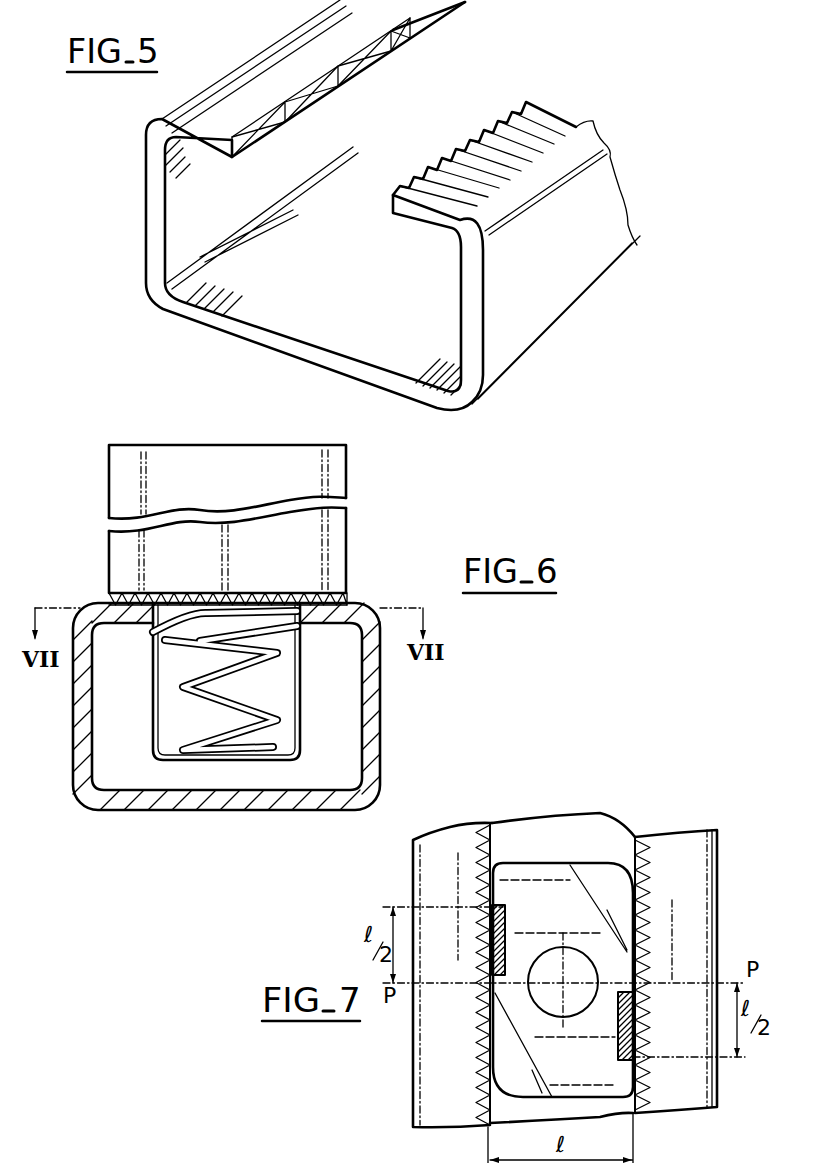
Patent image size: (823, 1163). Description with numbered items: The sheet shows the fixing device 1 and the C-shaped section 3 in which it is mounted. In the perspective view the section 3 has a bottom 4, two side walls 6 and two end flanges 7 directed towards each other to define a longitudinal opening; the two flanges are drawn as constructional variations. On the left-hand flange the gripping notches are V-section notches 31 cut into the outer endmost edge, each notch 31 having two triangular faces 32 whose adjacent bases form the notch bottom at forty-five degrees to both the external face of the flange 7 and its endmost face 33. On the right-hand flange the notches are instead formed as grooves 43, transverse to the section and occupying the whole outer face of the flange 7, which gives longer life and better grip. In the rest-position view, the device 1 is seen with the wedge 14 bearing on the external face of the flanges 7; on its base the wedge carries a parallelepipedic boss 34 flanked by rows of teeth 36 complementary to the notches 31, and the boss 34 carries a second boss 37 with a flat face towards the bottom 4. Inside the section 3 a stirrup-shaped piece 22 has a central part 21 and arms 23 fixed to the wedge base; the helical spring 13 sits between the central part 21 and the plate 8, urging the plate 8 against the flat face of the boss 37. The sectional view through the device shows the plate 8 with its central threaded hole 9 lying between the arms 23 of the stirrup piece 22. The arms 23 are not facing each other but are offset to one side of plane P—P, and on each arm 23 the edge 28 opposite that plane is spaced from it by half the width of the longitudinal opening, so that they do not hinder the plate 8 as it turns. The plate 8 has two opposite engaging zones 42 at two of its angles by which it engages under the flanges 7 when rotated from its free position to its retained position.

In FIG. 6, the device 1 is at (352, 502).
In FIG. 5, the C-shaped section 3 is at (137, 210).
In FIG. 6, the C-shaped section 3 is at (380, 772).
In FIG. 7, the C-shaped section 3 is at (407, 1040).
In FIG. 5, the bottom 4 is at (283, 360).
In FIG. 6, the bottom 4 is at (233, 803).
In FIG. 7, the bottom 4 is at (522, 832).
In FIG. 5, the side walls 6 is at (146, 173).
In FIG. 5, the end flanges 7 is at (235, 97).
In FIG. 6, the end flanges 7 is at (117, 610).
In FIG. 7, the end flanges 7 is at (430, 883).
In FIG. 6, the plate 8 is at (262, 610).
In FIG. 7, the plate 8 is at (637, 933).
In FIG. 7, the threaded hole 9 is at (567, 1015).
In FIG. 6, the spring 13 is at (203, 697).
In FIG. 6, the wedge 14 is at (330, 528).
In FIG. 6, the central part 21 is at (267, 763).
In FIG. 6, the stirrup-shaped piece 22 is at (323, 685).
In FIG. 7, the stirrup-shaped piece 22 is at (567, 978).
In FIG. 6, the arms 23 is at (153, 717).
In FIG. 7, the arms 23 is at (480, 963).
In FIG. 7, the edge 28 is at (478, 878).
In FIG. 5, the notch 31 is at (333, 50).
In FIG. 5, the triangular faces 32 is at (333, 62).
In FIG. 5, the endmost face 33 is at (417, 5).
In FIG. 6, the parallelepipedic boss 34 is at (347, 595).
In FIG. 6, the teeth 36 is at (247, 593).
In FIG. 6, the second boss 37 is at (187, 607).
In FIG. 6, the engaging zones 42 is at (153, 640).
In FIG. 7, the engaging zones 42 is at (607, 877).
In FIG. 5, the grooves 43 is at (562, 105).